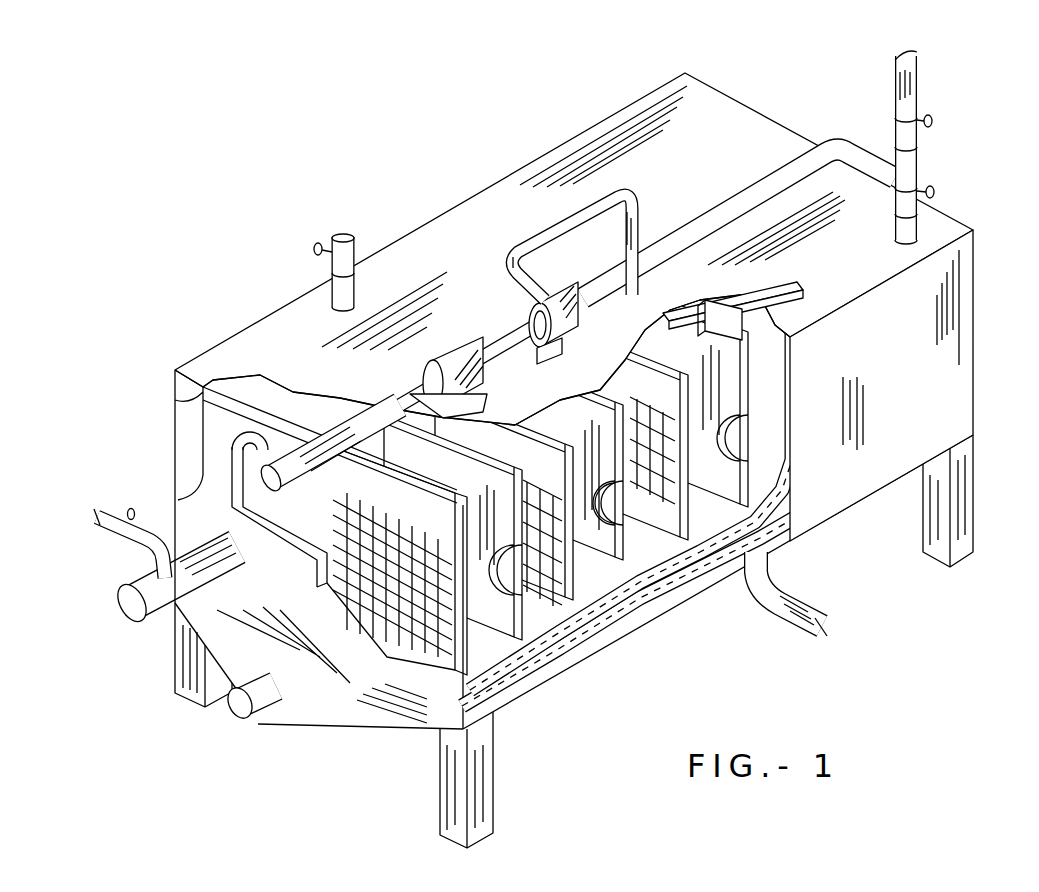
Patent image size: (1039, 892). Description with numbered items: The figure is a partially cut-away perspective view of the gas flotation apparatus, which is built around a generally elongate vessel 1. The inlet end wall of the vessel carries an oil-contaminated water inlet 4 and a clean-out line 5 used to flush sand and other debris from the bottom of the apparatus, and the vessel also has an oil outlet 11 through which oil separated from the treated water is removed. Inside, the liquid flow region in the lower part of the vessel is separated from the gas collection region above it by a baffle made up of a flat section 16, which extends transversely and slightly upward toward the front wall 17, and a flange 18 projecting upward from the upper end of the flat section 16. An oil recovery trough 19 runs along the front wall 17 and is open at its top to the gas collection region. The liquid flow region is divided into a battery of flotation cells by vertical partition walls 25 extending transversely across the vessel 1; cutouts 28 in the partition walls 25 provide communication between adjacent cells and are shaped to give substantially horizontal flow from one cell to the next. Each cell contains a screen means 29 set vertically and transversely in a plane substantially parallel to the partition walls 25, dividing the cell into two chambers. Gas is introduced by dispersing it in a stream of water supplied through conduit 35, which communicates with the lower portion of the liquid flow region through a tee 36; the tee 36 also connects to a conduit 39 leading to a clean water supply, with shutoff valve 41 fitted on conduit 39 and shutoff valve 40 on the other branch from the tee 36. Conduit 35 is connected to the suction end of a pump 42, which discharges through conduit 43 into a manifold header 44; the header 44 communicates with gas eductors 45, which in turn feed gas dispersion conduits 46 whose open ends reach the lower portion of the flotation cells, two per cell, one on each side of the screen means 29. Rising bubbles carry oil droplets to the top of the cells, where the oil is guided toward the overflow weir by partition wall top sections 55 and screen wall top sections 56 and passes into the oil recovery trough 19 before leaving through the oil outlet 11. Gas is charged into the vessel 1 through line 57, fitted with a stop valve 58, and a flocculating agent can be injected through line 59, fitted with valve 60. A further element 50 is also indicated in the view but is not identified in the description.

The vessel 1 is at (198, 352).
The oil-contaminated water inlet 4 is at (160, 612).
The clean-out line 5 is at (262, 722).
The oil outlet 11 is at (797, 630).
The flat section 16 is at (731, 310).
The front wall 17 is at (955, 405).
The flange 18 is at (770, 282).
The oil recovery trough 19 is at (678, 572).
The partition walls 25 is at (697, 496).
The cutouts 28 is at (610, 530).
The screen means 29 is at (628, 526).
The conduit 35 is at (783, 162).
The tee 36 is at (920, 167).
The conduit 39 is at (918, 63).
The shutoff valve 40 is at (940, 193).
The shutoff valve 41 is at (935, 118).
The pump 42 is at (532, 312).
The conduit 43 is at (635, 188).
The manifold header 44 is at (344, 424).
The gas eductors 45 is at (232, 447).
The gas dispersion conduits 46 is at (233, 508).
The support rail 50 is at (276, 447).
The partition wall top sections 55 is at (604, 387).
The screen wall top sections 56 is at (433, 497).
The line 57 is at (323, 290).
The stop valve 58 is at (358, 246).
The line 59 is at (144, 562).
The valve 60 is at (134, 510).